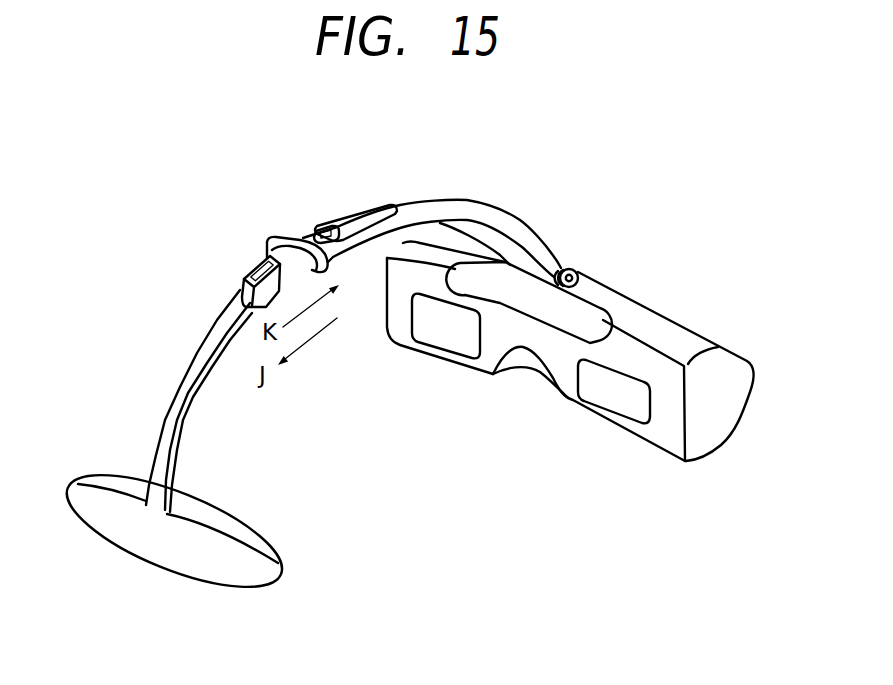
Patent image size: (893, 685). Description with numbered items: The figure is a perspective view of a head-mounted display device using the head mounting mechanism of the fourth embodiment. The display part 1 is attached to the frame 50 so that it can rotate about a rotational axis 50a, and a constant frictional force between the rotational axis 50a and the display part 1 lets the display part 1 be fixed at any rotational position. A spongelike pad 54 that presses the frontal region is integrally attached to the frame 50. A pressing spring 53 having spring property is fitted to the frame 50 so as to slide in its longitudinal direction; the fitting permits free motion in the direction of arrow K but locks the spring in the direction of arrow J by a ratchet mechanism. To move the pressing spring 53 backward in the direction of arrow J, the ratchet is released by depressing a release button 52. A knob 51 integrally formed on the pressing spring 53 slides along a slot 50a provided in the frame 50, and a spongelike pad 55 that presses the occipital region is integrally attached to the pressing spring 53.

The display part 1 is at (647, 316).
The frame 50 is at (522, 235).
The rotational axis / slot 50a is at (370, 210).
The knob 51 is at (307, 232).
The release button 52 is at (317, 232).
The pressing spring 53 is at (177, 393).
The spongelike pad (frontal) 54 is at (510, 293).
The spongelike pad (occipital) 55 is at (207, 515).